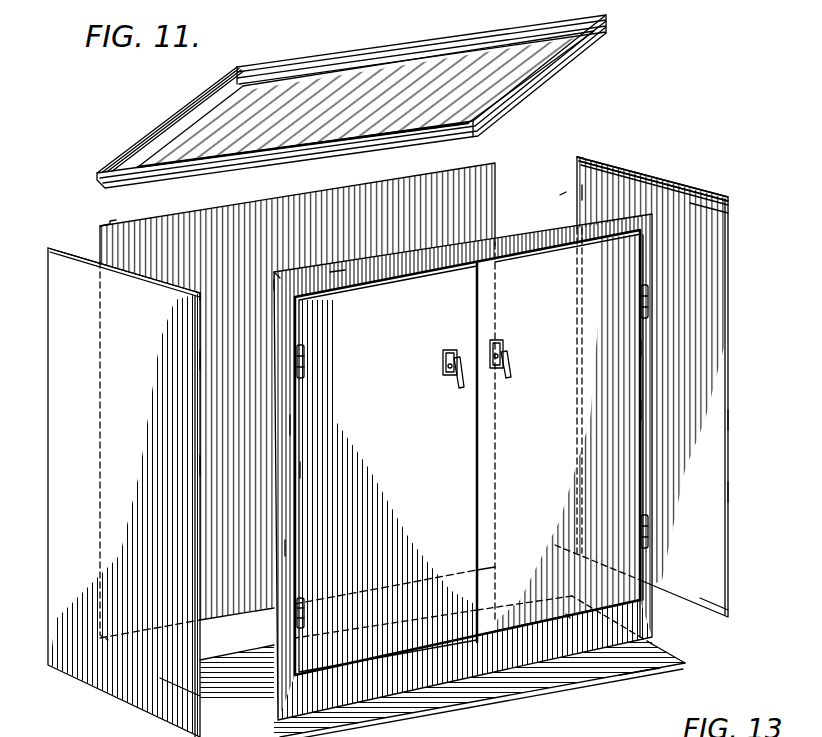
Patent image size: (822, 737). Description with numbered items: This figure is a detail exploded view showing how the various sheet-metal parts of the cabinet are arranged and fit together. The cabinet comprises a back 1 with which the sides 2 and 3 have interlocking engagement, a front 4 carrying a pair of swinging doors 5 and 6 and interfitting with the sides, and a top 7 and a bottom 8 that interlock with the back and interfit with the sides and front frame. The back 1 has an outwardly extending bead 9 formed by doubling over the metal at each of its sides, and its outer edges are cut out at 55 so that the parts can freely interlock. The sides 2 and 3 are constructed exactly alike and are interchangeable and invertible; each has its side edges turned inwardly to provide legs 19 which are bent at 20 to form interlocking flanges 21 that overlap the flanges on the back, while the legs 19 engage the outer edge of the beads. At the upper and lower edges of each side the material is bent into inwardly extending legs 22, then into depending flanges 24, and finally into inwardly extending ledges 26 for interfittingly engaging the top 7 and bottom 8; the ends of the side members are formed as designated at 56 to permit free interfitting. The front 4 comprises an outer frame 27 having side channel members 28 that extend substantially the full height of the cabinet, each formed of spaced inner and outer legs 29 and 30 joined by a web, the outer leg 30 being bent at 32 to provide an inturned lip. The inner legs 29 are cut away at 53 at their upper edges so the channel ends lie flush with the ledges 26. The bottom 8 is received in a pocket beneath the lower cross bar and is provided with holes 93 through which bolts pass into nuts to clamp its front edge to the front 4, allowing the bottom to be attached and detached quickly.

The back 1 is at (497, 183).
The side 2 is at (678, 185).
The side 3 is at (48, 272).
The front 4 is at (399, 262).
The swinging door 5 is at (569, 432).
The swinging door 6 is at (387, 467).
The top 7 is at (556, 60).
The bottom 8 is at (672, 665).
The bead 9 is at (100, 226).
The leg 19 is at (204, 360).
The bend 20 is at (204, 465).
The interlocking flange 21 is at (562, 196).
The inwardly extending leg 22 is at (137, 275).
The depending flange 24 is at (606, 166).
The inwardly extending ledge 26 is at (690, 203).
The outer frame 27 is at (302, 470).
The side channel member 28 is at (292, 425).
The inner leg 29 is at (274, 284).
The outer leg 30 is at (285, 548).
The bend 32 is at (336, 272).
The cut-away 53 is at (281, 263).
The cut-out 55 is at (107, 642).
The formed end 56 is at (201, 292).
The hole 93 is at (606, 699).